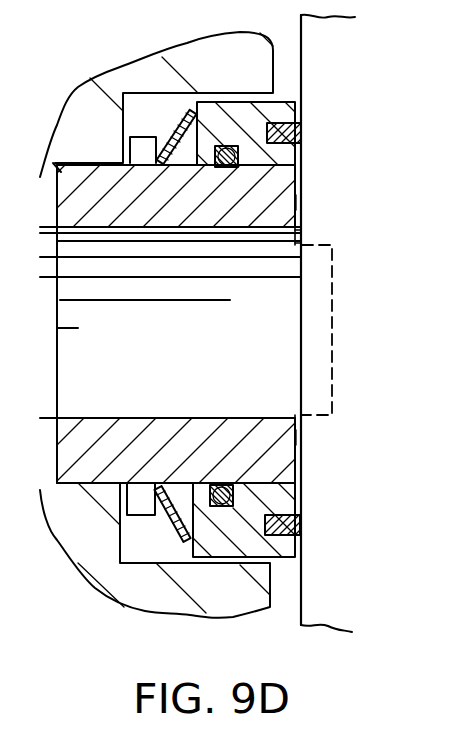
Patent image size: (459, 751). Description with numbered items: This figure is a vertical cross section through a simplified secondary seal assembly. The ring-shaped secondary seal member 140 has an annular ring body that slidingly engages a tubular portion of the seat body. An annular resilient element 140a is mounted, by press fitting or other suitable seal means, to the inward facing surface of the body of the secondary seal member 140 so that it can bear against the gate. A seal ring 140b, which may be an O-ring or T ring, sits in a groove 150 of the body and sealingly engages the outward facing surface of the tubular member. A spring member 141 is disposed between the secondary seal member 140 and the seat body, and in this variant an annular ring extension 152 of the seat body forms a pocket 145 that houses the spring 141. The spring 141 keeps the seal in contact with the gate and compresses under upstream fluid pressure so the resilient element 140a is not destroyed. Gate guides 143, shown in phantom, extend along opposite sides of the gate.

The secondary seal member 140 is at (302, 108).
The annular resilient element 140a is at (303, 137).
The seal ring 140b is at (225, 483).
The spring member 141 is at (176, 533).
The gate guides 143 is at (332, 318).
The pocket 145 is at (182, 498).
The groove 150 is at (238, 146).
The annular ring extension 152 is at (140, 163).